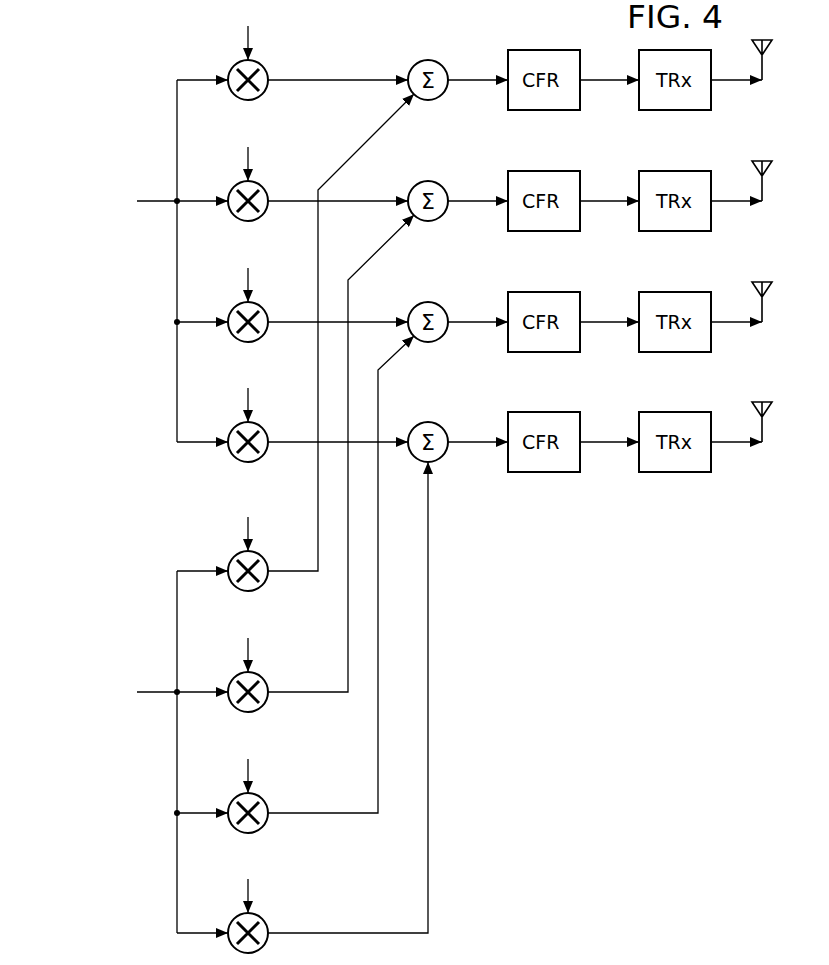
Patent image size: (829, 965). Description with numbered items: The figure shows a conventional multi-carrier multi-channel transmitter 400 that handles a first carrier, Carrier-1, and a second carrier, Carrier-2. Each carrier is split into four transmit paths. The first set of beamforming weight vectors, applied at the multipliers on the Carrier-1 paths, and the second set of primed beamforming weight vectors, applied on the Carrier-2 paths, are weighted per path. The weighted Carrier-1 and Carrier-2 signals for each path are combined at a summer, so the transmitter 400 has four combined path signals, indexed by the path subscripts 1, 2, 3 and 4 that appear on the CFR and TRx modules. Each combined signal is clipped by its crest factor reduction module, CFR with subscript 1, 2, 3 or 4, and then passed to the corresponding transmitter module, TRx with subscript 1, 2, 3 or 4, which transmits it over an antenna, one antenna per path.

The multi-carrier multi-channel transmitter 400 is at (405, 476).
The first transmit branch (CFR1, TRx1) 1 is at (474, 295).
The second transmit branch (CFR2, TRx2) 2 is at (474, 415).
The third transmit branch (CFR3, TRx3) 3 is at (474, 536).
The fourth transmit branch (CFR4, TRx4) 4 is at (710, 737).